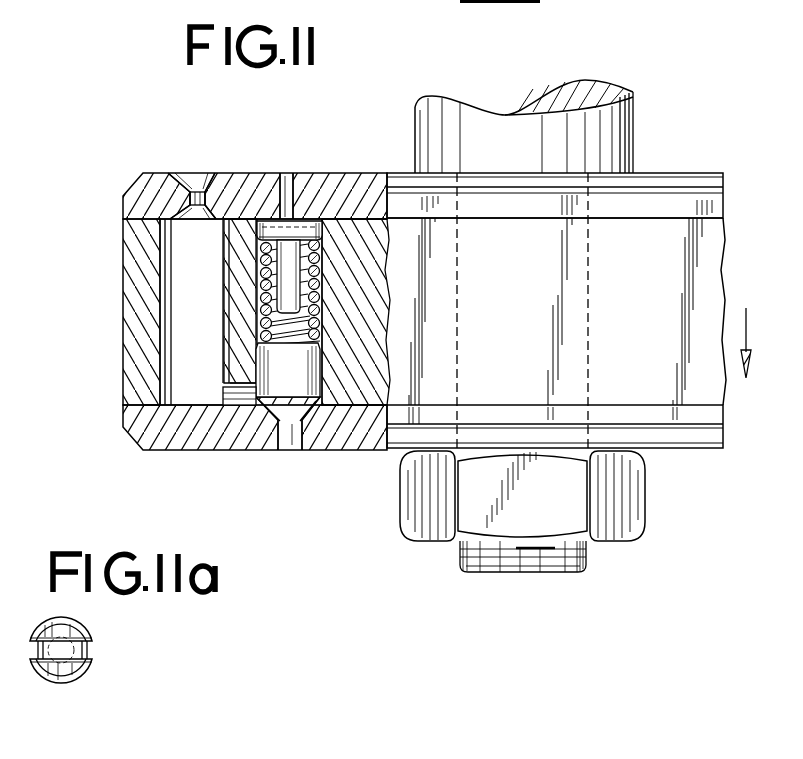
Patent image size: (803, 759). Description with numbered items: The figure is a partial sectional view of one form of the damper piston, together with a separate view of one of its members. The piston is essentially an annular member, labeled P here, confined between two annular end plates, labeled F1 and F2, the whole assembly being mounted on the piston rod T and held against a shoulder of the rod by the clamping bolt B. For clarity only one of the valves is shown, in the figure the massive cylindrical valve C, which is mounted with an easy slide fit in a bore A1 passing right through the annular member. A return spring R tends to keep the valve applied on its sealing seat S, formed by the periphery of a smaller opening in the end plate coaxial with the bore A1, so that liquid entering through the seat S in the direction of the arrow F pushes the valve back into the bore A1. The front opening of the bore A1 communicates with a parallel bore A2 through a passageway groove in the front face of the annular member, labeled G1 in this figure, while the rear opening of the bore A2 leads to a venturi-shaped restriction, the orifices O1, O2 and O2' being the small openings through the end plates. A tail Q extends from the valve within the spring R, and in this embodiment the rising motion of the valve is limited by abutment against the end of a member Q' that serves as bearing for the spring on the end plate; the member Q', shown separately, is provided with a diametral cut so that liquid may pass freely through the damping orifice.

In FIG. 11, the upper flange F2 is at (143, 193).
In FIG. 11, the lower flange F1 is at (140, 430).
In FIG. 11, the piston body P is at (135, 283).
In FIG. 11, the upper orifice O2 is at (205, 179).
In FIG. 11, the upper orifice channel O2' is at (304, 178).
In FIG. 11, the parallel bore A2 is at (165, 311).
In FIG. 11, the bore A1 is at (257, 283).
In FIG. 11, the spring R is at (318, 287).
In FIG. 11, the tail or extension of the valve Q is at (289, 267).
In FIG. 11, the valve closure member C is at (292, 375).
In FIG. 11, the sealing seat S is at (269, 406).
In FIG. 11, the gasket G1 is at (228, 393).
In FIG. 11, the lower orifice O1 is at (290, 442).
In FIG. 11, the tube T is at (633, 146).
In FIG. 11, the arrow indicating direction of piston displacement F is at (752, 334).
In FIG. 11, the nut B is at (636, 484).
In FIG. 11a, the spring bearing member Q' is at (74, 645).